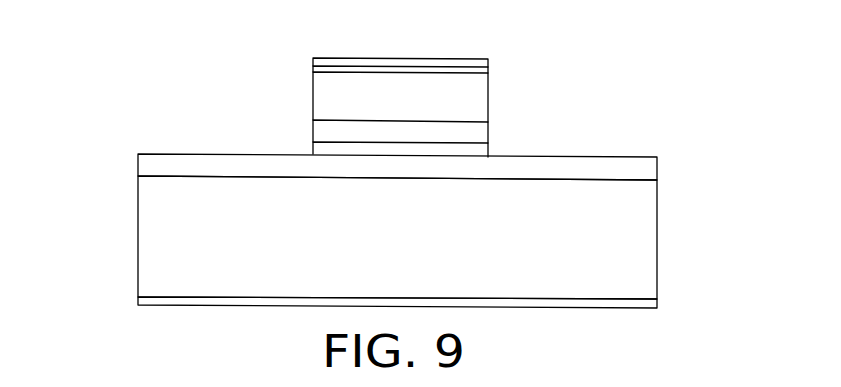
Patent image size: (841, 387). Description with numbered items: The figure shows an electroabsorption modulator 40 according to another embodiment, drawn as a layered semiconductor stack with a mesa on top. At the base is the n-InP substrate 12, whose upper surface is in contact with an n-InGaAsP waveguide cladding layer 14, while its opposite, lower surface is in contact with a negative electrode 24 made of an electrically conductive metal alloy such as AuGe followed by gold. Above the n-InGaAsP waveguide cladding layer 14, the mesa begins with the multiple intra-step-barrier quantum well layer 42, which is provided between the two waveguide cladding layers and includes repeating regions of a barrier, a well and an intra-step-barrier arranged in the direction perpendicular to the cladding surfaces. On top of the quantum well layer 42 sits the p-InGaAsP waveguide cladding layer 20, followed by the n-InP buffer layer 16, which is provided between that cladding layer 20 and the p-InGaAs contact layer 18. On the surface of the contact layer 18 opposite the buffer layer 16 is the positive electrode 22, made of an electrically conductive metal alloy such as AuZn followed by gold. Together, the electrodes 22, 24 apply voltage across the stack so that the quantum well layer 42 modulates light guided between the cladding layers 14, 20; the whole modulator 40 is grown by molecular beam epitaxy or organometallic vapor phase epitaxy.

The n-InP substrate 12 is at (657, 233).
The n-InGaAsP waveguide cladding layer 14 is at (657, 163).
The n-InP buffer layer 16 is at (488, 100).
The p-InGaAs contact layer 18 is at (488, 68).
The p-InGaAsP waveguide cladding layer 20 is at (488, 133).
The positive electrode 22 is at (466, 58).
The negative electrode 24 is at (637, 310).
The electroabsorption modulator 40 is at (368, 179).
The multiple intra-step-barrier quantum well layer 42 is at (488, 150).